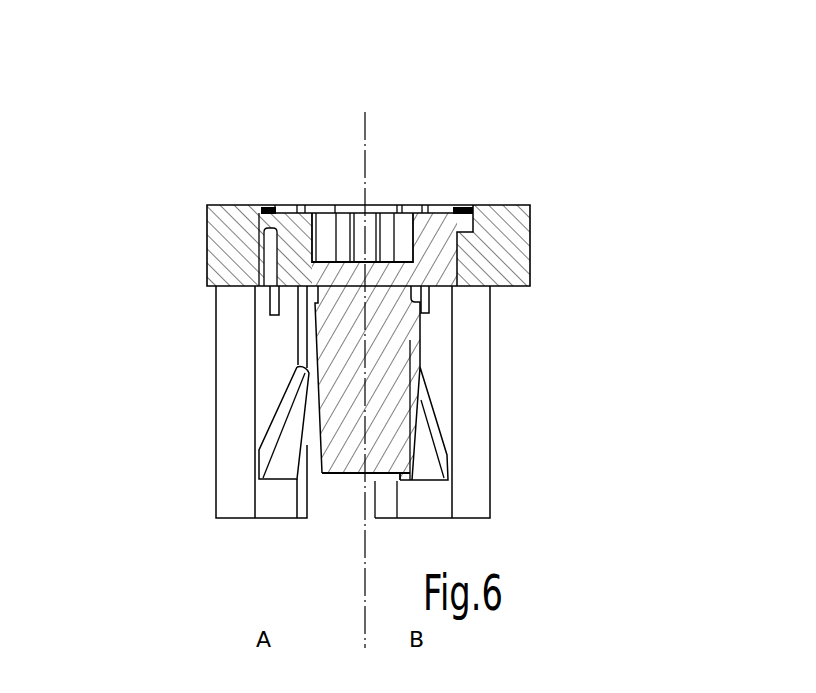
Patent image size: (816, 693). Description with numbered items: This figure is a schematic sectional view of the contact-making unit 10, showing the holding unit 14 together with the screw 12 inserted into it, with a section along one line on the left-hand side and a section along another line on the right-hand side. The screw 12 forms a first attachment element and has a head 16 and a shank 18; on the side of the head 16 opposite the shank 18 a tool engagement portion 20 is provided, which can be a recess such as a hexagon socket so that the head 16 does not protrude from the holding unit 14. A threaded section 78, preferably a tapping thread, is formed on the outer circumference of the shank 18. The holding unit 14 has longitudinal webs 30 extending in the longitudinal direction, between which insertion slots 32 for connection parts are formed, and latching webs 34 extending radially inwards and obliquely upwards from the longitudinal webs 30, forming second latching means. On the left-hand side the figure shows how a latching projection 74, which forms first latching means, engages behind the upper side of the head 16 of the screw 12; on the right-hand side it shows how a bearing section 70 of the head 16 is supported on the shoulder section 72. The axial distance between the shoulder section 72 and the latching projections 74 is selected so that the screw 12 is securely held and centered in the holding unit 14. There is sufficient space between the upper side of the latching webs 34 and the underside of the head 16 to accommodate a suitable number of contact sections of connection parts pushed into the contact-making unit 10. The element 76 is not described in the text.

The contact-making unit 10 is at (541, 164).
The screw 12 is at (449, 402).
The holding unit 14 is at (390, 180).
The head 16 is at (397, 235).
The shank 18 is at (387, 400).
The tool engagement portion 20 is at (326, 228).
The longitudinal webs 30 is at (230, 383).
The insertion slots 32 is at (340, 487).
The latching webs 34 is at (293, 438).
The bearing section 70 is at (455, 222).
The shoulder section 72 is at (472, 247).
The latching projections 74 is at (267, 203).
The locking tab 76 is at (272, 302).
The threaded section 78 is at (413, 430).